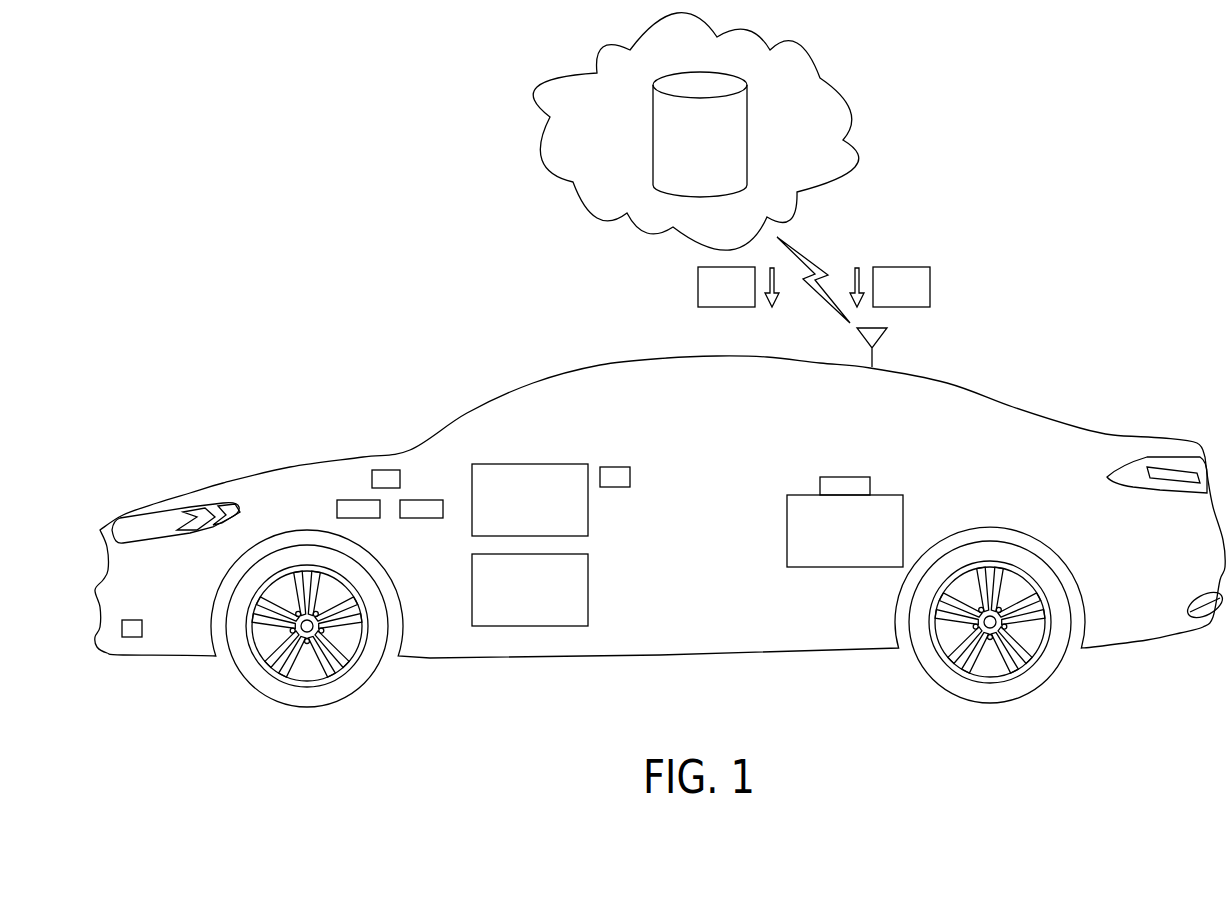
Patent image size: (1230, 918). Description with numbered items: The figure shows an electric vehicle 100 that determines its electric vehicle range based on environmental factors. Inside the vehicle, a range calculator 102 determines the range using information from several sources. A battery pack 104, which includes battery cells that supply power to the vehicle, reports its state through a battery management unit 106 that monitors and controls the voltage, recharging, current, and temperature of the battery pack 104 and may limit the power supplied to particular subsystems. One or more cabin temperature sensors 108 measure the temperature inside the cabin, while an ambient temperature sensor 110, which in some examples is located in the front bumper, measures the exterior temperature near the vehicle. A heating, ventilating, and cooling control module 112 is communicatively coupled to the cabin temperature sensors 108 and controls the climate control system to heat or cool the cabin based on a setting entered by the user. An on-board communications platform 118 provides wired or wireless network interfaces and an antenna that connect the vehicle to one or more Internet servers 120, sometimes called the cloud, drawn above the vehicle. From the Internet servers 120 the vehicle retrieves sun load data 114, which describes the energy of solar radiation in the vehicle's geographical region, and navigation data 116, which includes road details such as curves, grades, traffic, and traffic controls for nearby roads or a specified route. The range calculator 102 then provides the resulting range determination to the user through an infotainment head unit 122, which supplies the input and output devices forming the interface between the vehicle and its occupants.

The electric vehicle 100 is at (1152, 437).
The range calculator 102 is at (360, 500).
The battery pack 104 is at (838, 567).
The battery management unit 106 is at (845, 477).
The cabin temperature sensor 108 is at (617, 467).
The ambient temperature sensor 110 is at (132, 637).
The HVAC control module 112 is at (428, 500).
The sun load data 114 is at (918, 297).
The navigation data 116 is at (743, 297).
The on-board communications platform 118 is at (528, 627).
The Internet server 120 is at (747, 132).
The infotainment head unit 122 is at (532, 464).